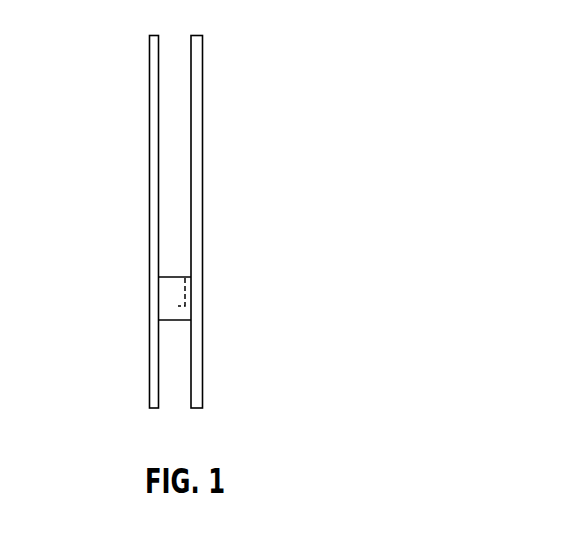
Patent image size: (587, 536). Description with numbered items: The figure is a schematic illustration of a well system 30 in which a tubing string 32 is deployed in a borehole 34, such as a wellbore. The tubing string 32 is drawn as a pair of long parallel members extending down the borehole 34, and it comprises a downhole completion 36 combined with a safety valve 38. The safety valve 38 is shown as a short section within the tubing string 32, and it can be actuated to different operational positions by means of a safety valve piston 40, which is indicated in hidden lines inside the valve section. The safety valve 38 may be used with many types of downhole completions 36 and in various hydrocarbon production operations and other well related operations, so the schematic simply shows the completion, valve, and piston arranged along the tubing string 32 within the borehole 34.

The well system 30 is at (230, 47).
The tubing string 32 is at (195, 188).
The borehole 34 is at (204, 331).
The downhole completion 36 is at (152, 258).
The safety valve 38 is at (158, 308).
The safety valve piston 40 is at (189, 288).